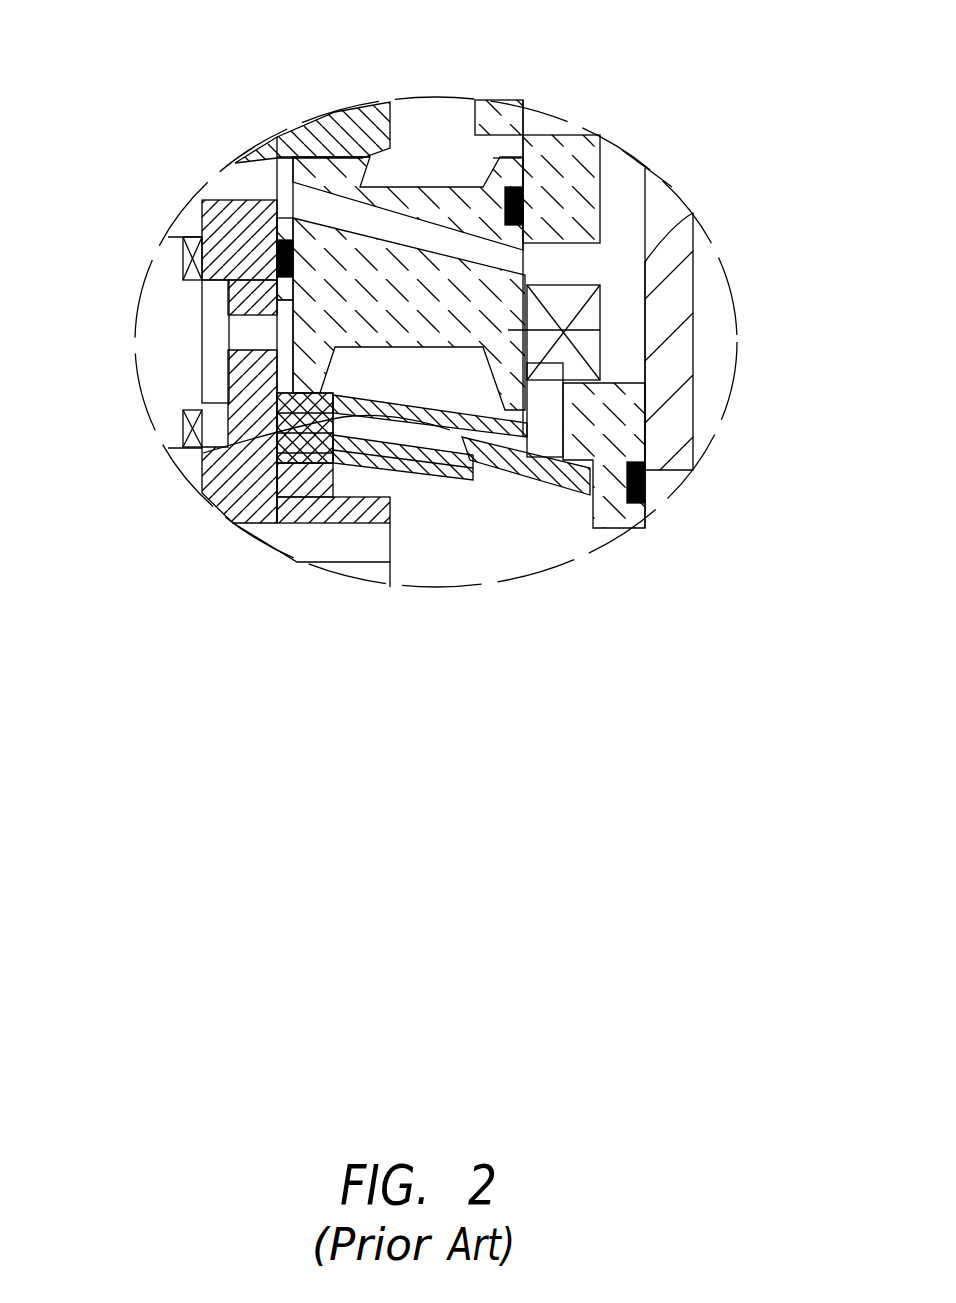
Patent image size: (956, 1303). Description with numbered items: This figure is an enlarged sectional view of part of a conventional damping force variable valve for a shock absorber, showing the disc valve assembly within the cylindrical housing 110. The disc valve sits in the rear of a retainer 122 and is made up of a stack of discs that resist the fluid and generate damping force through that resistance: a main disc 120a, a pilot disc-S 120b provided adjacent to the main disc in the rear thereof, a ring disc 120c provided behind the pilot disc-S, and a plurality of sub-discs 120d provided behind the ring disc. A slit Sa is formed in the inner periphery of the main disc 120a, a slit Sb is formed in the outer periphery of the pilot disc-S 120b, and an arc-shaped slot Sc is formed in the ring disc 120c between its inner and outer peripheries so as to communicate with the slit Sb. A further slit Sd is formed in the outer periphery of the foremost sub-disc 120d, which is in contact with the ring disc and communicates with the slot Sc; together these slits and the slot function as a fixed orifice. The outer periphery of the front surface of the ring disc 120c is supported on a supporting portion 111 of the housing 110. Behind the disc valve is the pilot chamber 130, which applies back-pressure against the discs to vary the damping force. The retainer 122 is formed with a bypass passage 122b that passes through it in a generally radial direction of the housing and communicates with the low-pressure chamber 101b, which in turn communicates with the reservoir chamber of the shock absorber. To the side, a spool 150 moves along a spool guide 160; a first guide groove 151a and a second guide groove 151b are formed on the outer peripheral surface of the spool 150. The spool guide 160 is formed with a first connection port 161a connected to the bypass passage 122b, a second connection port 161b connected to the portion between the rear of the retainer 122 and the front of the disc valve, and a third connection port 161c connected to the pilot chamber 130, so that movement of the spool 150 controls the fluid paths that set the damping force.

The low-pressure chamber 101b is at (620, 173).
The housing 110 is at (663, 203).
The supporting portion 111 is at (633, 513).
The main disc 120a is at (345, 385).
The pilot disc-S 120b is at (273, 468).
The ring disc 120c is at (543, 450).
The sub-discs 120d is at (413, 440).
The retainer 122 is at (695, 213).
The bypass passage 122b is at (483, 237).
The pilot chamber 130 is at (522, 552).
The spool 150 is at (160, 345).
The first guide groove 151a is at (200, 277).
The second guide groove 151b is at (200, 424).
The spool guide 160 is at (295, 560).
The first connection port 161a is at (218, 182).
The second connection port 161b is at (252, 327).
The third connection port 161c is at (348, 537).
The slit Sa is at (202, 448).
The slit Sb is at (505, 425).
The arc-shaped slot Sc is at (505, 442).
The slit Sd is at (463, 440).